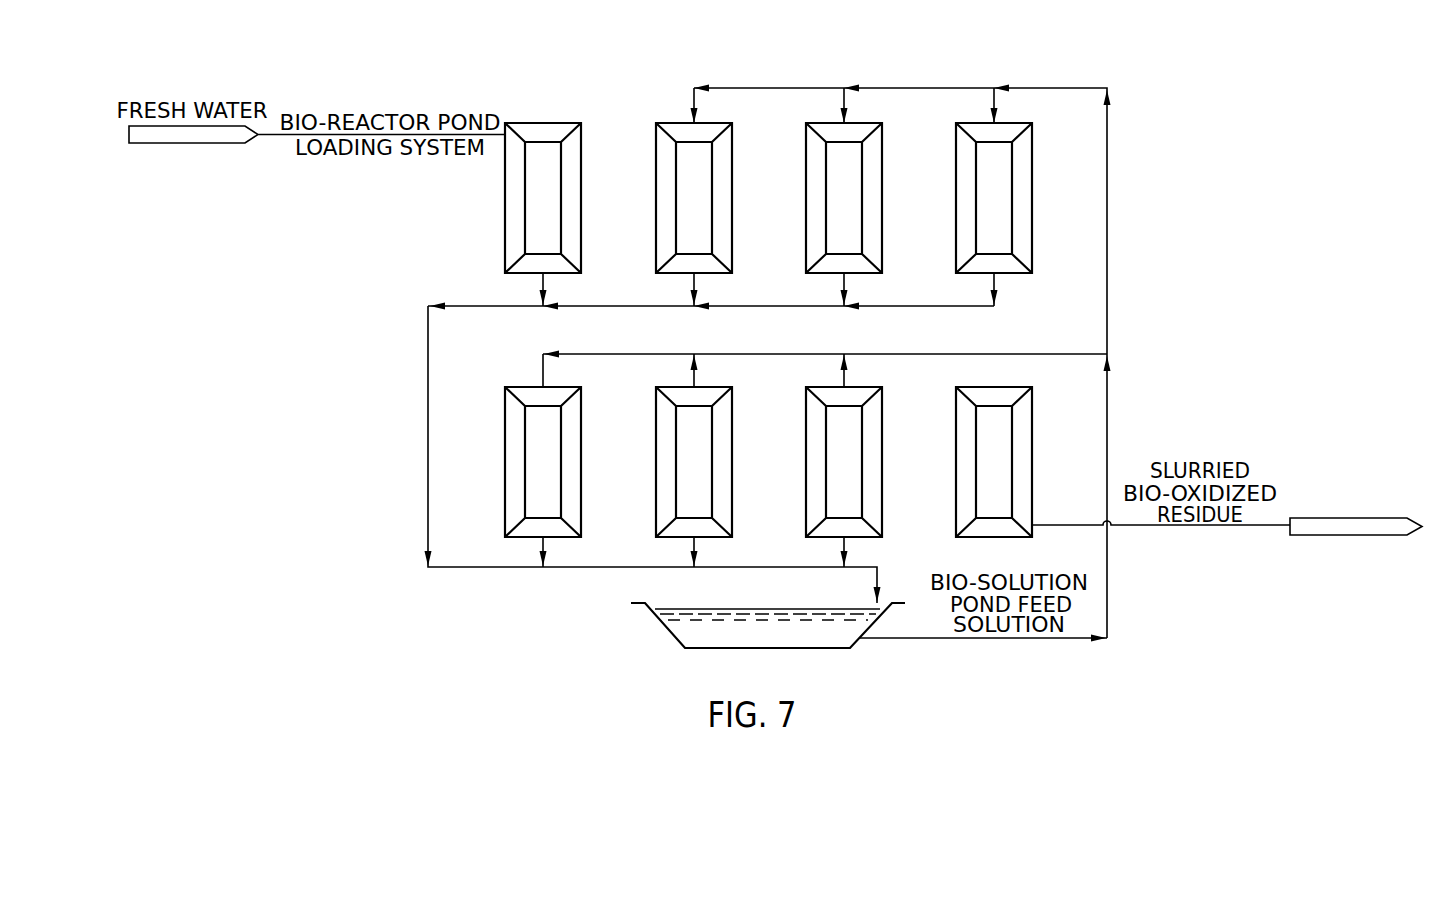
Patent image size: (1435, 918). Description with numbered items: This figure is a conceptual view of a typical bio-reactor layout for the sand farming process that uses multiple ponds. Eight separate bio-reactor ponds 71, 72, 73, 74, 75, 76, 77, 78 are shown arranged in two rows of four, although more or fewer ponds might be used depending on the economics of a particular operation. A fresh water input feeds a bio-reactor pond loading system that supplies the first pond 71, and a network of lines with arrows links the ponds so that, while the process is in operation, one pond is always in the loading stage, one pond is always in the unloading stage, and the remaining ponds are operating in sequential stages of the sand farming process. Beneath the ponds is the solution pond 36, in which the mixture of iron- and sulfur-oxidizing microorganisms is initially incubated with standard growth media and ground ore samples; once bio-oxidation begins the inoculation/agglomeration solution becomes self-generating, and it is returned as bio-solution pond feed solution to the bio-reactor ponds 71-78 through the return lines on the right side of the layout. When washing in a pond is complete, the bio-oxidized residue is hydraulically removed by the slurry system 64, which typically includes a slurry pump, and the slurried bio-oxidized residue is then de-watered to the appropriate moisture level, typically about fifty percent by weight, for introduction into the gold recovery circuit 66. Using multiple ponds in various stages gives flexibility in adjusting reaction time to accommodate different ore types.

The bio-reactor pond 71 is at (557, 131).
The bio-reactor pond 72 is at (721, 183).
The bio-reactor pond 73 is at (871, 183).
The bio-reactor pond 74 is at (1021, 183).
The bio-reactor pond 75 is at (511, 458).
The bio-reactor pond 76 is at (663, 458).
The bio-reactor pond 77 is at (813, 458).
The bio-reactor pond 78 is at (962, 458).
The solution pond 36 is at (683, 630).
The slurry system 64 is at (1165, 527).
The gold recovery circuit 66 is at (1343, 528).